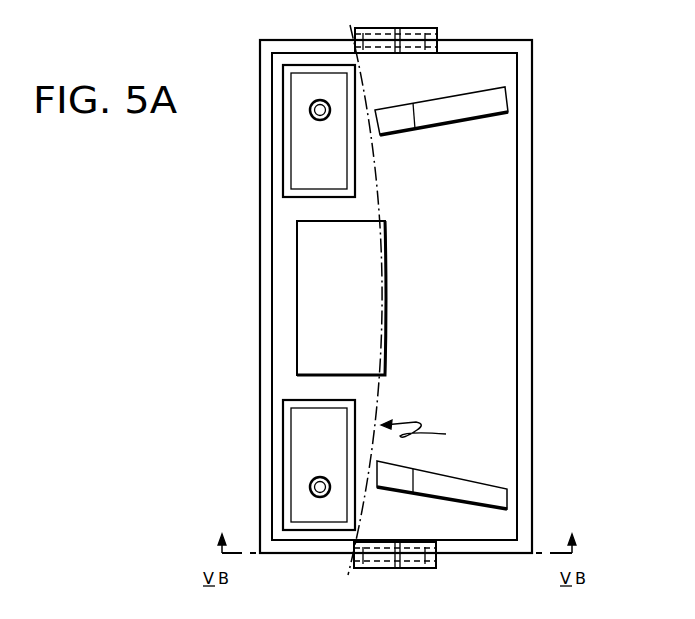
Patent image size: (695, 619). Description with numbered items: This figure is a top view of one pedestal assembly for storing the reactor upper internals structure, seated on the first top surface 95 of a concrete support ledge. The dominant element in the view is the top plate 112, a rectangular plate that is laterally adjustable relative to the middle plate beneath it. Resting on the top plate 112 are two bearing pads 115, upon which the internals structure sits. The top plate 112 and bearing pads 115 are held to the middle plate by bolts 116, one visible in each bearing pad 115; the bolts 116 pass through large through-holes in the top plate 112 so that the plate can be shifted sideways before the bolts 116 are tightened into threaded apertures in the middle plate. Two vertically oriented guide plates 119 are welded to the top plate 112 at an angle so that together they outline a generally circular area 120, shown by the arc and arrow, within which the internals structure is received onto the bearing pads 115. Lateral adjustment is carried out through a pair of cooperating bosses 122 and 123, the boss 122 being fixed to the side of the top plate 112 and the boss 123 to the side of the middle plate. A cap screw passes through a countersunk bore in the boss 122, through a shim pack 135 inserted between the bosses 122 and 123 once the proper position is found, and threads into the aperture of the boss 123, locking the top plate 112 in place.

The first top surface 95 is at (523, 337).
The top plate 112 is at (497, 283).
The bearing pads 115 is at (303, 172).
The bolts 116 is at (310, 110).
The guide plates 119 is at (503, 92).
The generally circular area 120 is at (429, 433).
The boss of the top plate 122 is at (382, 568).
The boss of the middle plate 123 is at (428, 568).
The shim pack 135 is at (393, 568).